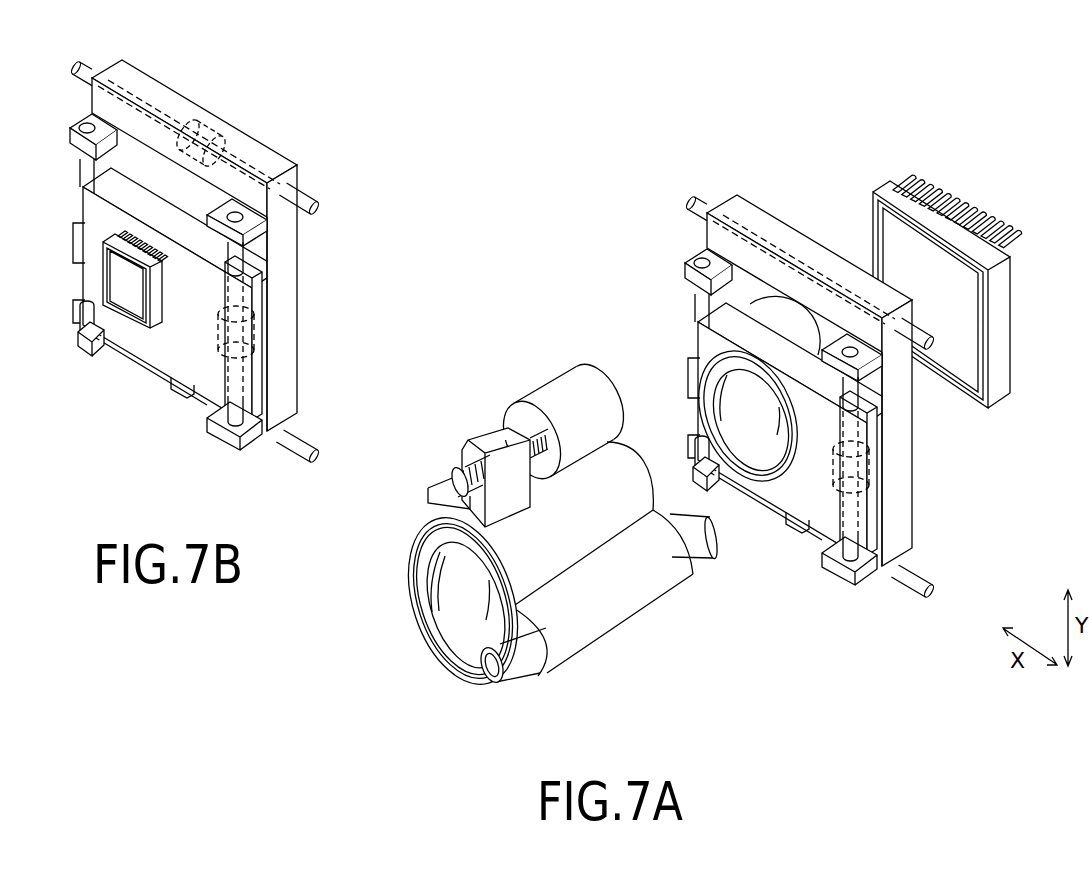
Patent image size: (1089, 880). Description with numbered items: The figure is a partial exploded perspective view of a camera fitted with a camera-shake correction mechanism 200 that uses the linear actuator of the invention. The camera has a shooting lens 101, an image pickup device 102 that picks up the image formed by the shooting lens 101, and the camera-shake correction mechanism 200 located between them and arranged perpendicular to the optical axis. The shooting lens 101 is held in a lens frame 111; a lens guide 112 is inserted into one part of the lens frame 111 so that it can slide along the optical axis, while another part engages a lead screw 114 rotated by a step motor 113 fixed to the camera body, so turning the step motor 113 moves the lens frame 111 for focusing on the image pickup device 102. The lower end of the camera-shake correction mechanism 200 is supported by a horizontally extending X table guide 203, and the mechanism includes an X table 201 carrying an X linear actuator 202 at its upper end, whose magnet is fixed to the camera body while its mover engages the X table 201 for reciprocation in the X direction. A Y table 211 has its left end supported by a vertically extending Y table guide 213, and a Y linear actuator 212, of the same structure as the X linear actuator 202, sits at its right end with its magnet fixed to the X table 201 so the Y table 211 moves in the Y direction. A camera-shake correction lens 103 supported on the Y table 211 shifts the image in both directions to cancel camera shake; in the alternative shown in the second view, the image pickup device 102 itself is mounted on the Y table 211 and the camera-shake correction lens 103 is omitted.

In FIG. 7A, the shooting lens 101 is at (455, 608).
In FIG. 7B, the image pickup device 102 is at (117, 280).
In FIG. 7A, the image pickup device 102 is at (1005, 398).
In FIG. 7A, the camera-shake correction lens 103 is at (731, 396).
In FIG. 7A, the lens frame 111 is at (617, 602).
In FIG. 7A, the lens guide 112 is at (512, 663).
In FIG. 7A, the step motor 113 is at (555, 385).
In FIG. 7A, the lead screw 114 is at (463, 467).
In FIG. 7A, the camera-shake correction mechanism 200 is at (818, 635).
In FIG. 7B, the X table 201 is at (190, 100).
In FIG. 7A, the X table 201 is at (809, 341).
In FIG. 7B, the X linear actuator 202 is at (133, 87).
In FIG. 7A, the X linear actuator 202 is at (793, 234).
In FIG. 7B, the X table guide 203 is at (302, 442).
In FIG. 7A, the X table guide 203 is at (928, 564).
In FIG. 7B, the Y table 211 is at (172, 358).
In FIG. 7A, the Y table 211 is at (791, 432).
In FIG. 7B, the Y linear actuator 212 is at (214, 364).
In FIG. 7A, the Y linear actuator 212 is at (810, 502).
In FIG. 7B, the Y table guide 213 is at (85, 171).
In FIG. 7A, the Y table guide 213 is at (682, 370).